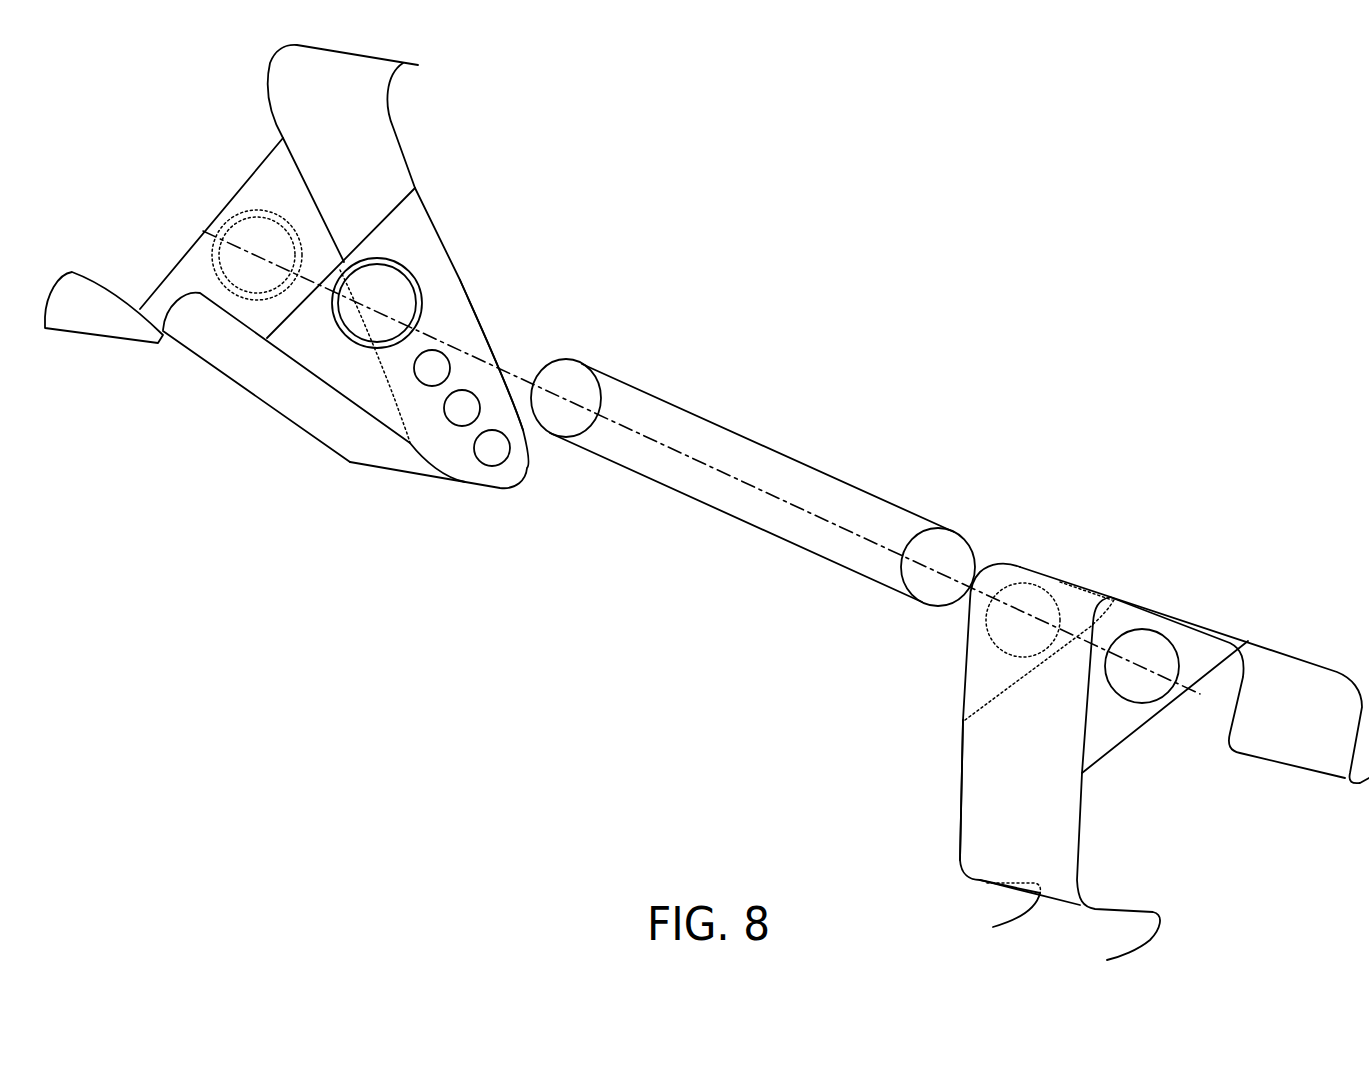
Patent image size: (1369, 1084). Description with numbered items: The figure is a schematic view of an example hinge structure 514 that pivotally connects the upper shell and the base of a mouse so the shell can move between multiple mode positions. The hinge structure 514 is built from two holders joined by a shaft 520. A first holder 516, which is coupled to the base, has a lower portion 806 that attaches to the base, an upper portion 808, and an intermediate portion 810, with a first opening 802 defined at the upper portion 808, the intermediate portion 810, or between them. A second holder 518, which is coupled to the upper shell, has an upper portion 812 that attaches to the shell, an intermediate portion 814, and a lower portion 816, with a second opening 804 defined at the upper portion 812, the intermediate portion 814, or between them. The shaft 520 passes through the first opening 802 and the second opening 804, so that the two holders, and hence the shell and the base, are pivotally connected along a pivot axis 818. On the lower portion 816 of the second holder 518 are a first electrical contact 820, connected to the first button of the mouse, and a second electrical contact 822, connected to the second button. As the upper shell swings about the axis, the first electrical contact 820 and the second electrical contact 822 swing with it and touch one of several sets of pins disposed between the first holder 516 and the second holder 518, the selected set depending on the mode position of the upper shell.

The hinge structure 514 is at (1080, 300).
The first holder 516 is at (1192, 590).
The second holder 518 is at (473, 160).
The shaft 520 is at (753, 440).
The first opening 802 is at (1180, 635).
The second opening 804 is at (400, 290).
The lower portion 806 is at (1000, 928).
The upper portion 808 is at (967, 638).
The intermediate portion 810 is at (963, 750).
The upper portion 812 is at (100, 338).
The intermediate portion 814 is at (263, 370).
The lower portion 816 is at (350, 458).
The pivot axis 818 is at (517, 372).
The first electrical contact 820 is at (445, 350).
The second electrical contact 822 is at (470, 390).